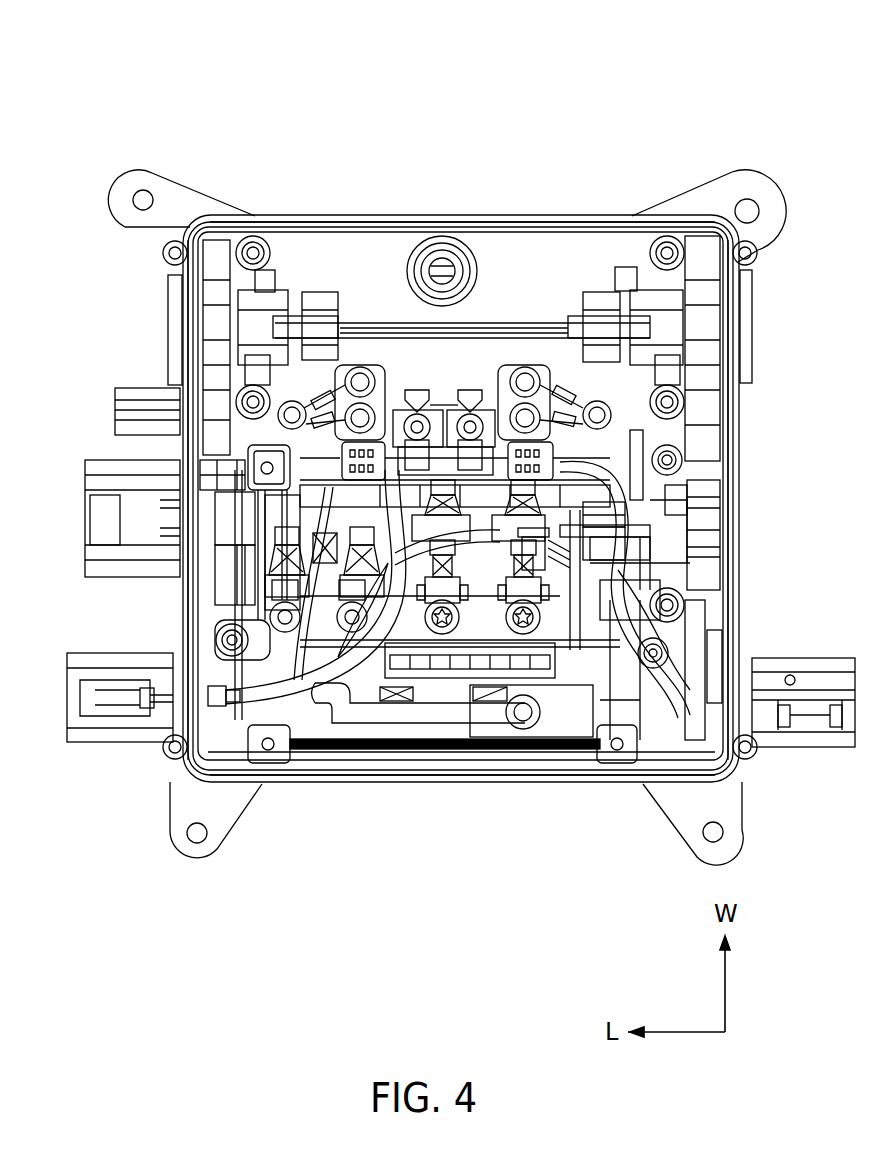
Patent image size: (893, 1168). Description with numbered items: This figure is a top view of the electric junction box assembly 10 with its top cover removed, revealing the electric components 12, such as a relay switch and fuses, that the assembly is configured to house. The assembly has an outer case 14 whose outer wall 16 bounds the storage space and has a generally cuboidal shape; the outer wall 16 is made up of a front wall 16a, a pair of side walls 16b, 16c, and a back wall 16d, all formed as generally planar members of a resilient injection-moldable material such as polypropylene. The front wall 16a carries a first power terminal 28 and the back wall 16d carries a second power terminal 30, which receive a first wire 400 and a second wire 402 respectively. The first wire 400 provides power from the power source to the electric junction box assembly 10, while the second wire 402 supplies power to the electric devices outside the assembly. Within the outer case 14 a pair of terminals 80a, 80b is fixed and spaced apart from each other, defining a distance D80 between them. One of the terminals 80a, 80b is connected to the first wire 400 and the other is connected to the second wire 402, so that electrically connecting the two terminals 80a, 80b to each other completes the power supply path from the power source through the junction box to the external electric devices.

The electric junction box assembly 10 is at (697, 78).
The electric components 12 is at (686, 604).
The outer case 14 is at (568, 786).
The outer wall 16 is at (383, 784).
The front wall 16a is at (745, 413).
The side wall 16b is at (460, 784).
The side wall 16c is at (461, 215).
The back wall 16d is at (180, 605).
The first power terminal 28 is at (810, 753).
The second power terminal 30 is at (93, 745).
The terminal 80a is at (474, 398).
The terminal 80b is at (416, 397).
The distance between terminals D80 is at (470, 393).
The first wire 400 is at (663, 683).
The second wire 402 is at (247, 698).